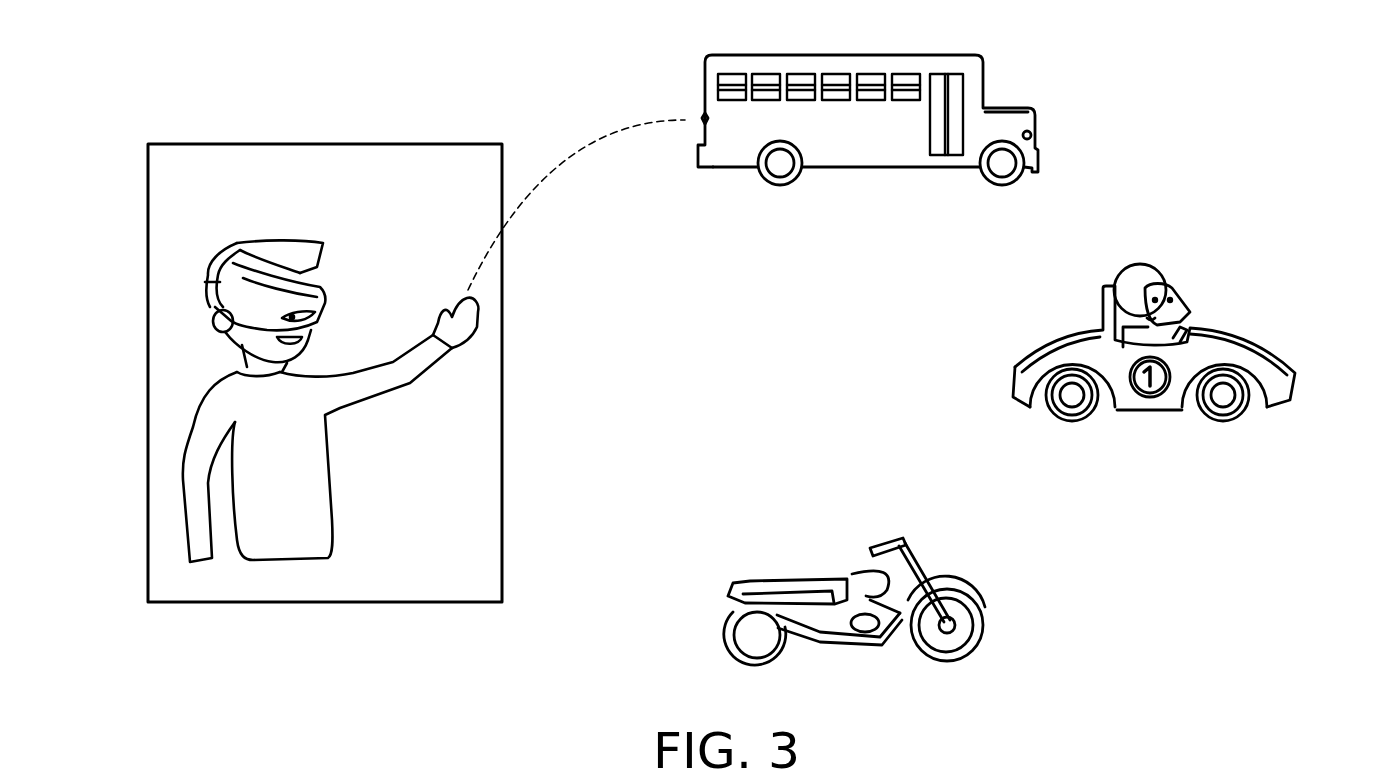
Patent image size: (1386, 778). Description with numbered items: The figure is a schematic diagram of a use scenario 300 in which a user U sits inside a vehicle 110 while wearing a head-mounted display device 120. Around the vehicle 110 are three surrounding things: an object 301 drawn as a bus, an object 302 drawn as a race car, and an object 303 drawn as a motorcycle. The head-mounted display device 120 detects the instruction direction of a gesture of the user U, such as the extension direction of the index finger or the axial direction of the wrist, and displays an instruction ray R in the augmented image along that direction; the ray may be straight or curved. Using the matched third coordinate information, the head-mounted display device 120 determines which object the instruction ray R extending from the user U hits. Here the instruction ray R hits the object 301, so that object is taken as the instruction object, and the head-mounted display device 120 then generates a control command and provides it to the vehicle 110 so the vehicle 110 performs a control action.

The use scenario 300 is at (1322, 689).
The vehicle 110 is at (392, 143).
The head-mounted display device 120 is at (320, 297).
The user U is at (331, 401).
The instruction ray R is at (579, 152).
The object 301 is at (912, 50).
The object 302 is at (1143, 255).
The object 303 is at (887, 540).